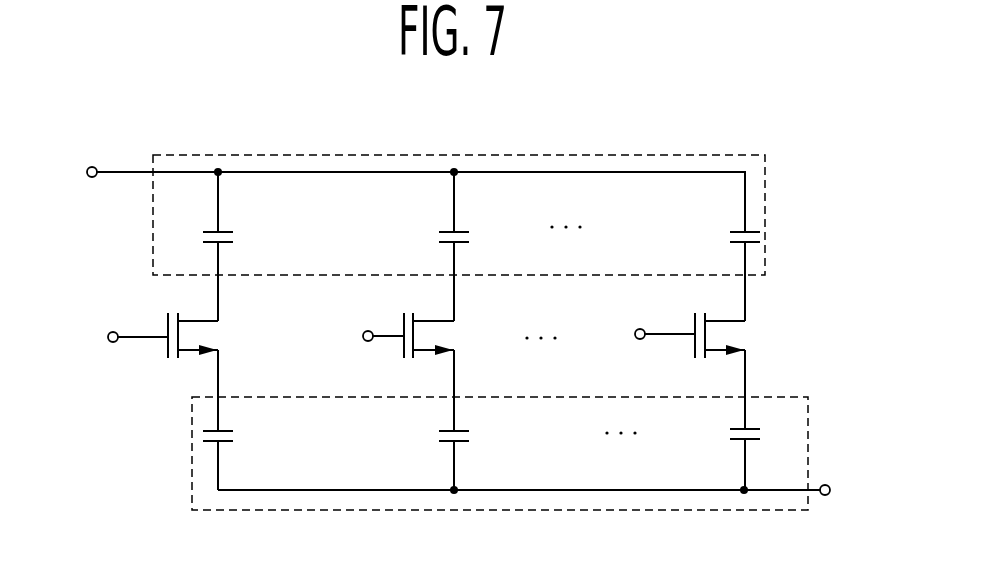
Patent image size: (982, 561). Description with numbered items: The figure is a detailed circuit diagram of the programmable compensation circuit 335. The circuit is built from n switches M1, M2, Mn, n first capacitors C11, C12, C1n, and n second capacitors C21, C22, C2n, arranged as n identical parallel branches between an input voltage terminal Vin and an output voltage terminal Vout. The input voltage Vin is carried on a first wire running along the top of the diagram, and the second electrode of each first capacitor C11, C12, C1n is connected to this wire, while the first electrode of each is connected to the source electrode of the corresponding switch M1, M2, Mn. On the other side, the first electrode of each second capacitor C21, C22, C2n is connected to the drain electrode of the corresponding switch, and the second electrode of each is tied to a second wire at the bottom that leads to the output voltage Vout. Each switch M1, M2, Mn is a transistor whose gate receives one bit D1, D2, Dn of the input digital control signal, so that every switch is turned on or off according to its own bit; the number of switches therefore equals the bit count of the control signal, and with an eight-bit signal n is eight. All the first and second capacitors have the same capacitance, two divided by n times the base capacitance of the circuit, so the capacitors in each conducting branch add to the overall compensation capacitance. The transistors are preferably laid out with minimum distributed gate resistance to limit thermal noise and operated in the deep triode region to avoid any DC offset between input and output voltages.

The programmable compensation circuit 335 is at (769, 118).
The input voltage Vin is at (68, 170).
The output voltage Vout is at (857, 491).
The first capacitor C11 is at (199, 246).
The first capacitor C12 is at (435, 246).
The first capacitor C1n is at (725, 271).
The second capacitor C21 is at (237, 456).
The second capacitor C22 is at (477, 456).
The second capacitor C2n is at (766, 455).
The switch M1 is at (209, 372).
The switch M2 is at (447, 372).
The switch Mn is at (737, 371).
The control signal bit D1 is at (121, 338).
The control signal bit D2 is at (367, 338).
The control signal bit Dn is at (647, 338).